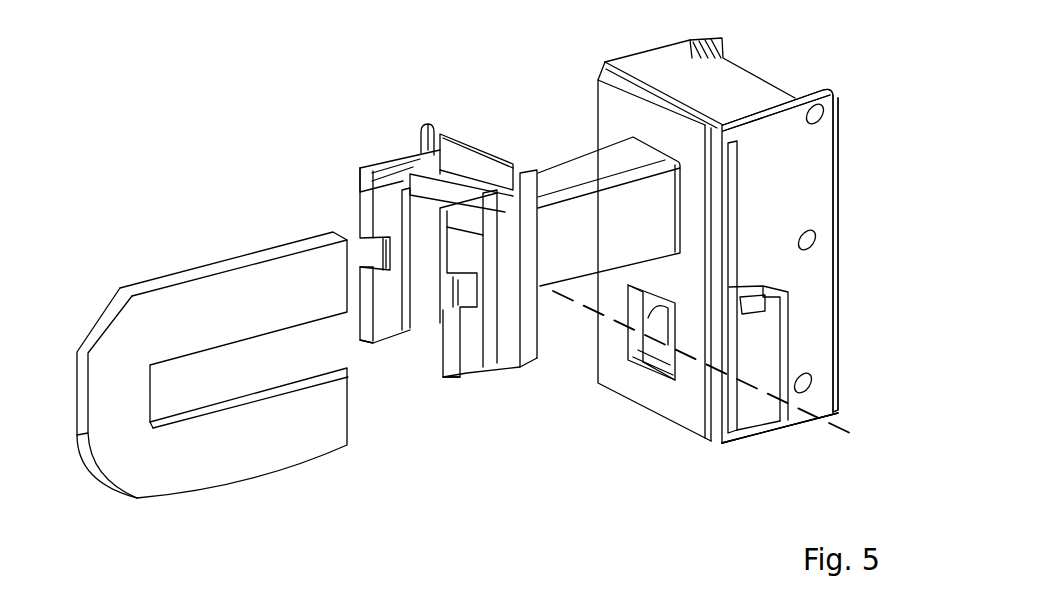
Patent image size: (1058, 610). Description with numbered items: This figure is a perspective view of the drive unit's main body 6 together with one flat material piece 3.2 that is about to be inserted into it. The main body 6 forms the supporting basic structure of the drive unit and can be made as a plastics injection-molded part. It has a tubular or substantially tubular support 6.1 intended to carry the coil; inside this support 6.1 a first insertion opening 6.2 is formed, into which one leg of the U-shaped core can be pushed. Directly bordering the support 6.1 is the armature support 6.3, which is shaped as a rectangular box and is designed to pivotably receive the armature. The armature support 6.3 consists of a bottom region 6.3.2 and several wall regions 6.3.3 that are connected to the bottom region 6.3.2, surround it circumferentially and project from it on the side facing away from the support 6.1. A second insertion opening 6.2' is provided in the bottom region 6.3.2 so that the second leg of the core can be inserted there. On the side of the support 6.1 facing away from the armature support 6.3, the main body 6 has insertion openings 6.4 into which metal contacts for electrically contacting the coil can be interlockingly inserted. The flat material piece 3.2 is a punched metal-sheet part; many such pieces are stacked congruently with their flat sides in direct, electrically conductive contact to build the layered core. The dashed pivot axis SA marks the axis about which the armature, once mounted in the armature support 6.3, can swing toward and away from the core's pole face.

The flat material piece 3.2 is at (157, 470).
The main body 6 is at (803, 45).
The support 6.1 is at (564, 149).
The first insertion opening 6.2 is at (381, 233).
The second insertion opening 6.2' is at (540, 299).
The armature support 6.3 is at (851, 240).
The bottom region 6.3.2 is at (679, 411).
The wall region 6.3.3 is at (770, 427).
The insertion opening 6.4 is at (387, 354).
The pivot axis of the armature SA is at (724, 366).